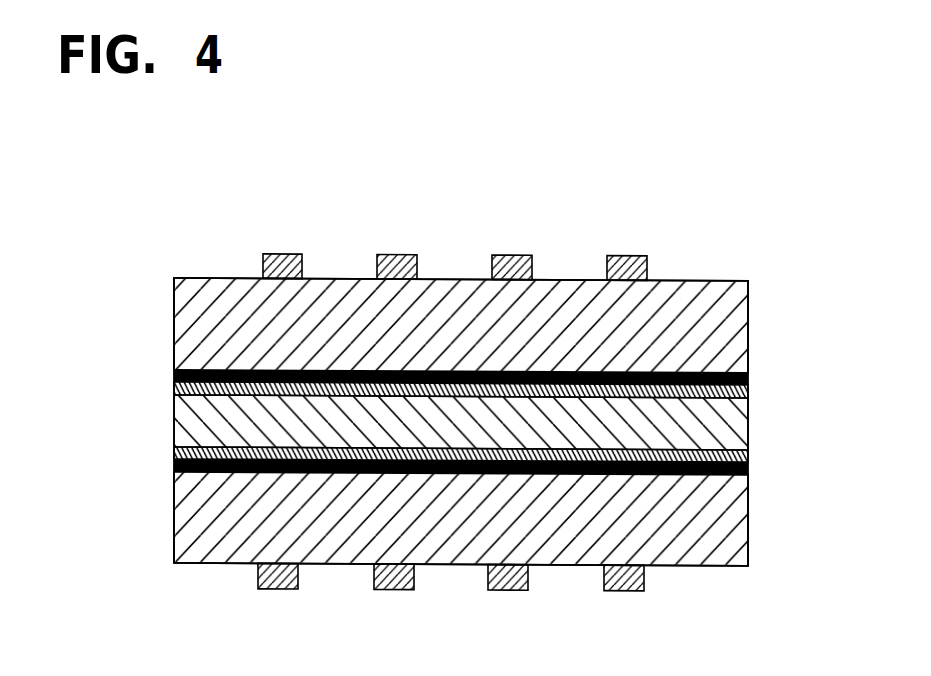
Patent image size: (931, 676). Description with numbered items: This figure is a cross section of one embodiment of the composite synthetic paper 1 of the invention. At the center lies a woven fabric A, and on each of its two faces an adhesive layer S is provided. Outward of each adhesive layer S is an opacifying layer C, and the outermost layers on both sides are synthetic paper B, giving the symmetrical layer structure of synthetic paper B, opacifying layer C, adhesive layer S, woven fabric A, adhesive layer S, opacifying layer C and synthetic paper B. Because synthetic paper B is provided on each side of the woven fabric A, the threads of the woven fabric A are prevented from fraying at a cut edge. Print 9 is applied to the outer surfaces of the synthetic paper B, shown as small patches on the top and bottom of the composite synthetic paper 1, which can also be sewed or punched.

The composite synthetic paper 1 is at (574, 176).
The print 9 is at (628, 257).
The synthetic paper B is at (742, 328).
The opacifying layer C is at (748, 375).
The adhesive layer S is at (748, 390).
The woven fabric A is at (740, 425).